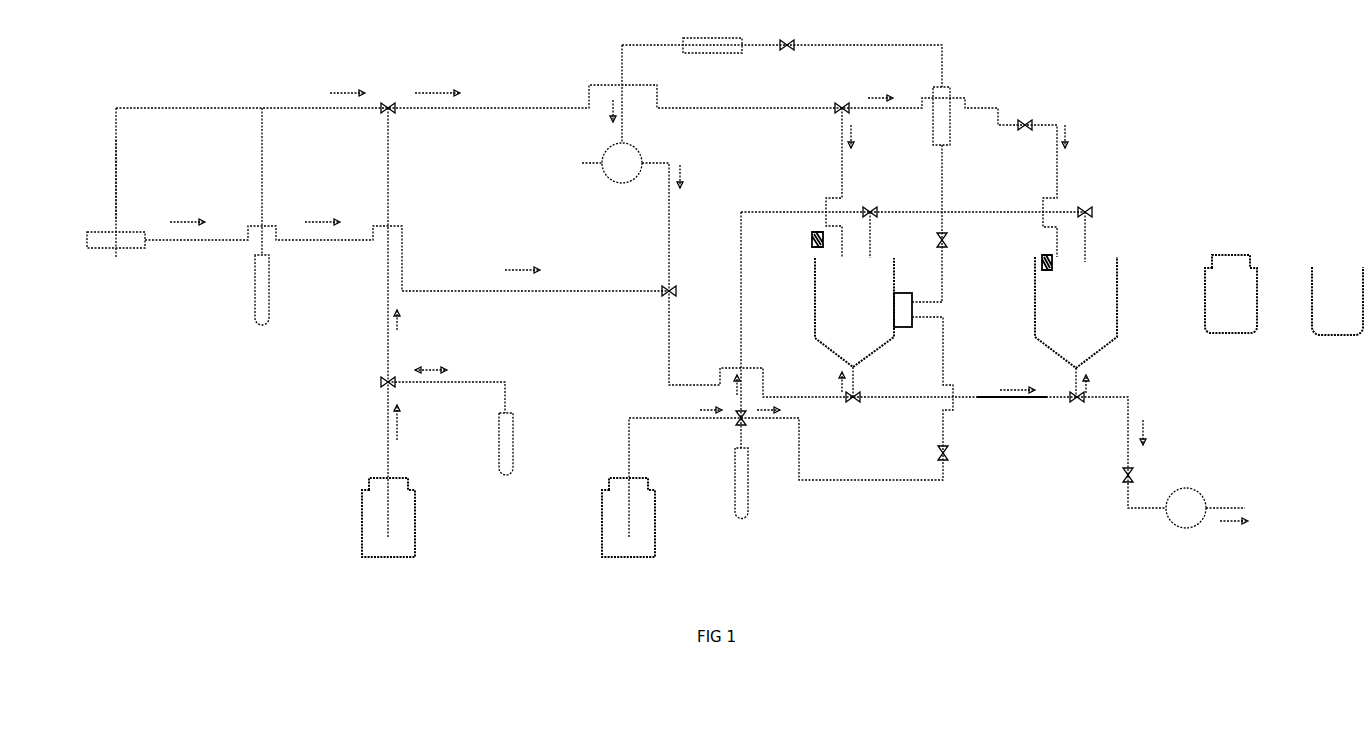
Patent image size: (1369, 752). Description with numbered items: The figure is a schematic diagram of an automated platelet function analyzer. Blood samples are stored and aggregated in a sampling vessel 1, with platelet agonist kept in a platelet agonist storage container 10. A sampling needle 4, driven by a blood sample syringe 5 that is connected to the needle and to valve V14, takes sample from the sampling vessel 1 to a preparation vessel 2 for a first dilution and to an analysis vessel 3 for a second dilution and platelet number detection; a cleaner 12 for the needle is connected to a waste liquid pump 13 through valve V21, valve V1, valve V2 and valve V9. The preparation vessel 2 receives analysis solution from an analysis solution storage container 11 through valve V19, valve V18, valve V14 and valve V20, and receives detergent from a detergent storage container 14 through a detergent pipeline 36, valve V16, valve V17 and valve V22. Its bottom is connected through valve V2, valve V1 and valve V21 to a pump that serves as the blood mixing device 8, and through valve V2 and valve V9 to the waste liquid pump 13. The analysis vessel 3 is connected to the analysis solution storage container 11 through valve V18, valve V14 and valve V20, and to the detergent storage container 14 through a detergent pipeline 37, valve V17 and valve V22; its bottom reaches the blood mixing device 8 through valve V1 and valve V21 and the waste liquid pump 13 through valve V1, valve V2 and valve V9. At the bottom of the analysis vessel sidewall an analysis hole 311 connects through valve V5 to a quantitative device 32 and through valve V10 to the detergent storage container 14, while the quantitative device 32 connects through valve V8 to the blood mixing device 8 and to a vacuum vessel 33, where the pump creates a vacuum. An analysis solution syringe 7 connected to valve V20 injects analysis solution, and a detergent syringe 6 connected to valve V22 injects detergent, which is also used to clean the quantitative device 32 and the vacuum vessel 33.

The sampling vessel 1 is at (1337, 330).
The preparation vessel 2 is at (1046, 358).
The analysis vessel 3 is at (812, 338).
The sampling needle 4 is at (122, 180).
The blood sample syringe 5 is at (272, 288).
The detergent syringe 6 is at (750, 498).
The analysis solution syringe 7 is at (497, 448).
The blood mixing device 8 is at (599, 176).
The platelet agonist storage container 10 is at (1225, 310).
The analysis solution storage container 11 is at (370, 537).
The cleaner 12 is at (125, 238).
The waste liquid pump 13 is at (1170, 523).
The detergent storage container 14 is at (612, 530).
The quantitative device 32 is at (953, 116).
The vacuum vessel 33 is at (712, 34).
The detergent pipeline 36 is at (1098, 237).
The detergent pipeline 37 is at (882, 235).
The analysis hole 311 is at (897, 291).
The valve V1 is at (855, 409).
The valve V2 is at (1080, 409).
The valve V5 is at (953, 243).
The valve V8 is at (786, 39).
The valve V9 is at (1114, 477).
The valve V10 is at (958, 456).
The valve V14 is at (390, 97).
The valve V16 is at (1092, 201).
The valve V17 is at (881, 201).
The valve V18 is at (836, 94).
The valve V19 is at (1026, 115).
The valve V20 is at (372, 373).
The valve V21 is at (651, 305).
The valve V22 is at (758, 427).